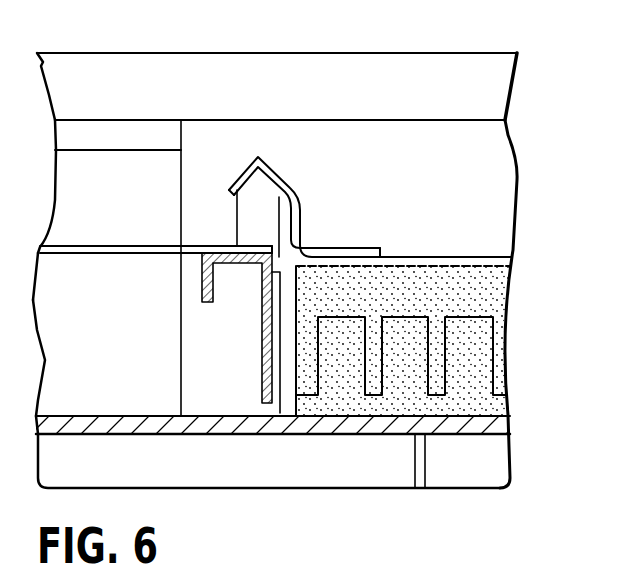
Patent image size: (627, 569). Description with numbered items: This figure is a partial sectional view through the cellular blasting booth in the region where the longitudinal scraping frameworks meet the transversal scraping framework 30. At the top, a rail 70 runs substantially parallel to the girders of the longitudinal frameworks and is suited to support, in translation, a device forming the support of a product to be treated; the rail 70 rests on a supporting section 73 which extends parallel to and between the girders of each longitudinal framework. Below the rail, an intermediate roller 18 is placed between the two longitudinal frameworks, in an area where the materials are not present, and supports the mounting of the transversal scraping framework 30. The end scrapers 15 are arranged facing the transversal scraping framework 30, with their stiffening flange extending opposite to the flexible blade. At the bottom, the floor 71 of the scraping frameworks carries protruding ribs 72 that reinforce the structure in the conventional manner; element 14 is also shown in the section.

The rail 70 is at (245, 87).
The supporting section 73 is at (152, 205).
The intermediate roller 18 is at (268, 212).
The shelf plate 14 is at (445, 258).
The transversal scraping framework 30 is at (522, 275).
The end scrapers 15 is at (263, 371).
The floor 71 is at (455, 437).
The protruding ribs 72 is at (338, 470).